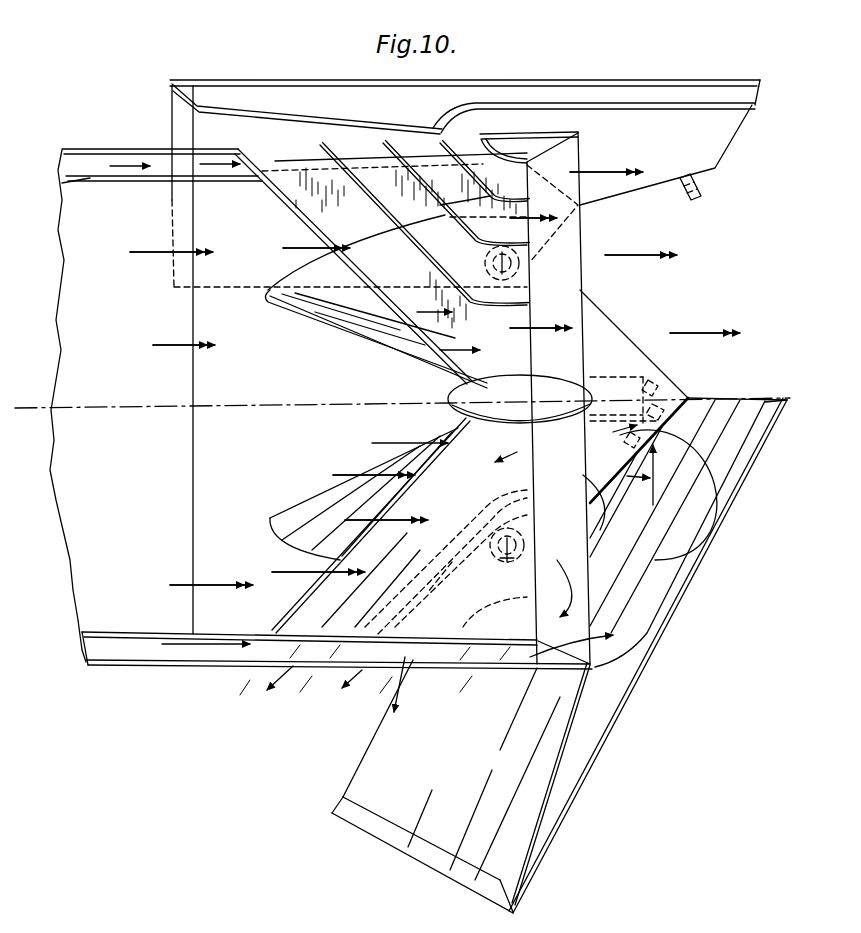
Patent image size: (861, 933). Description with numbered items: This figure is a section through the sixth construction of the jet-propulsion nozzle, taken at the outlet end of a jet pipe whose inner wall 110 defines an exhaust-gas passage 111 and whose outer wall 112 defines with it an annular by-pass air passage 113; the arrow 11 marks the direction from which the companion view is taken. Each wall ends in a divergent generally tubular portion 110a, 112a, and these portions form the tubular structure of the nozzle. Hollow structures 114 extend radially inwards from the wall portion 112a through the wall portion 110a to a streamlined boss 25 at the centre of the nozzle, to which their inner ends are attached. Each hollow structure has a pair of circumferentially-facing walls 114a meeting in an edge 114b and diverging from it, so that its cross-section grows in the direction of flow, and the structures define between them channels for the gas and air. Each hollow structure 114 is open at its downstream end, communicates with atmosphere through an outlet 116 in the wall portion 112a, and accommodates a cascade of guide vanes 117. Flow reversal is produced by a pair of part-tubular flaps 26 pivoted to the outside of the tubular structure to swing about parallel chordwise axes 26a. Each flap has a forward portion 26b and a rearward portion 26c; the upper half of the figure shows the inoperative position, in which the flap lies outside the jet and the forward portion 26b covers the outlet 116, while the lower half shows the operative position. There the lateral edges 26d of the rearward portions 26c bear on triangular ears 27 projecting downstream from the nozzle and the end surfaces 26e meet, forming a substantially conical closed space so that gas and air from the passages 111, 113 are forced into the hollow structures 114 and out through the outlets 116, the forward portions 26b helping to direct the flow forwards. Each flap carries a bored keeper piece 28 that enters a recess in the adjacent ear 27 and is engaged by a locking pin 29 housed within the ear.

The arrow 11 is at (797, 290).
The streamlined boss 25 is at (450, 390).
The part-tubular flap 26 is at (529, 92).
The pivot axis 26a is at (512, 263).
The forward portion 26b is at (290, 108).
The rearward portion 26c is at (655, 100).
The lateral edge 26d is at (612, 198).
The end surface 26e is at (777, 398).
The triangular ear 27 is at (610, 335).
The bored keeper piece 28 is at (697, 198).
The locking pin 29 is at (672, 368).
The inner wall 110 is at (62, 186).
The divergent tubular wall portion 110a is at (318, 636).
The exhaust-gas passage 111 is at (80, 282).
The outer wall 112 is at (77, 150).
The divergent tubular wall portion 112a is at (302, 668).
The by-pass air passage 113 is at (84, 168).
The hollow structure 114 is at (350, 330).
The circumferentially-facing wall 114a is at (312, 199).
The edge 114b is at (445, 203).
The outlet 116 is at (277, 160).
The guide vane 117 is at (440, 206).